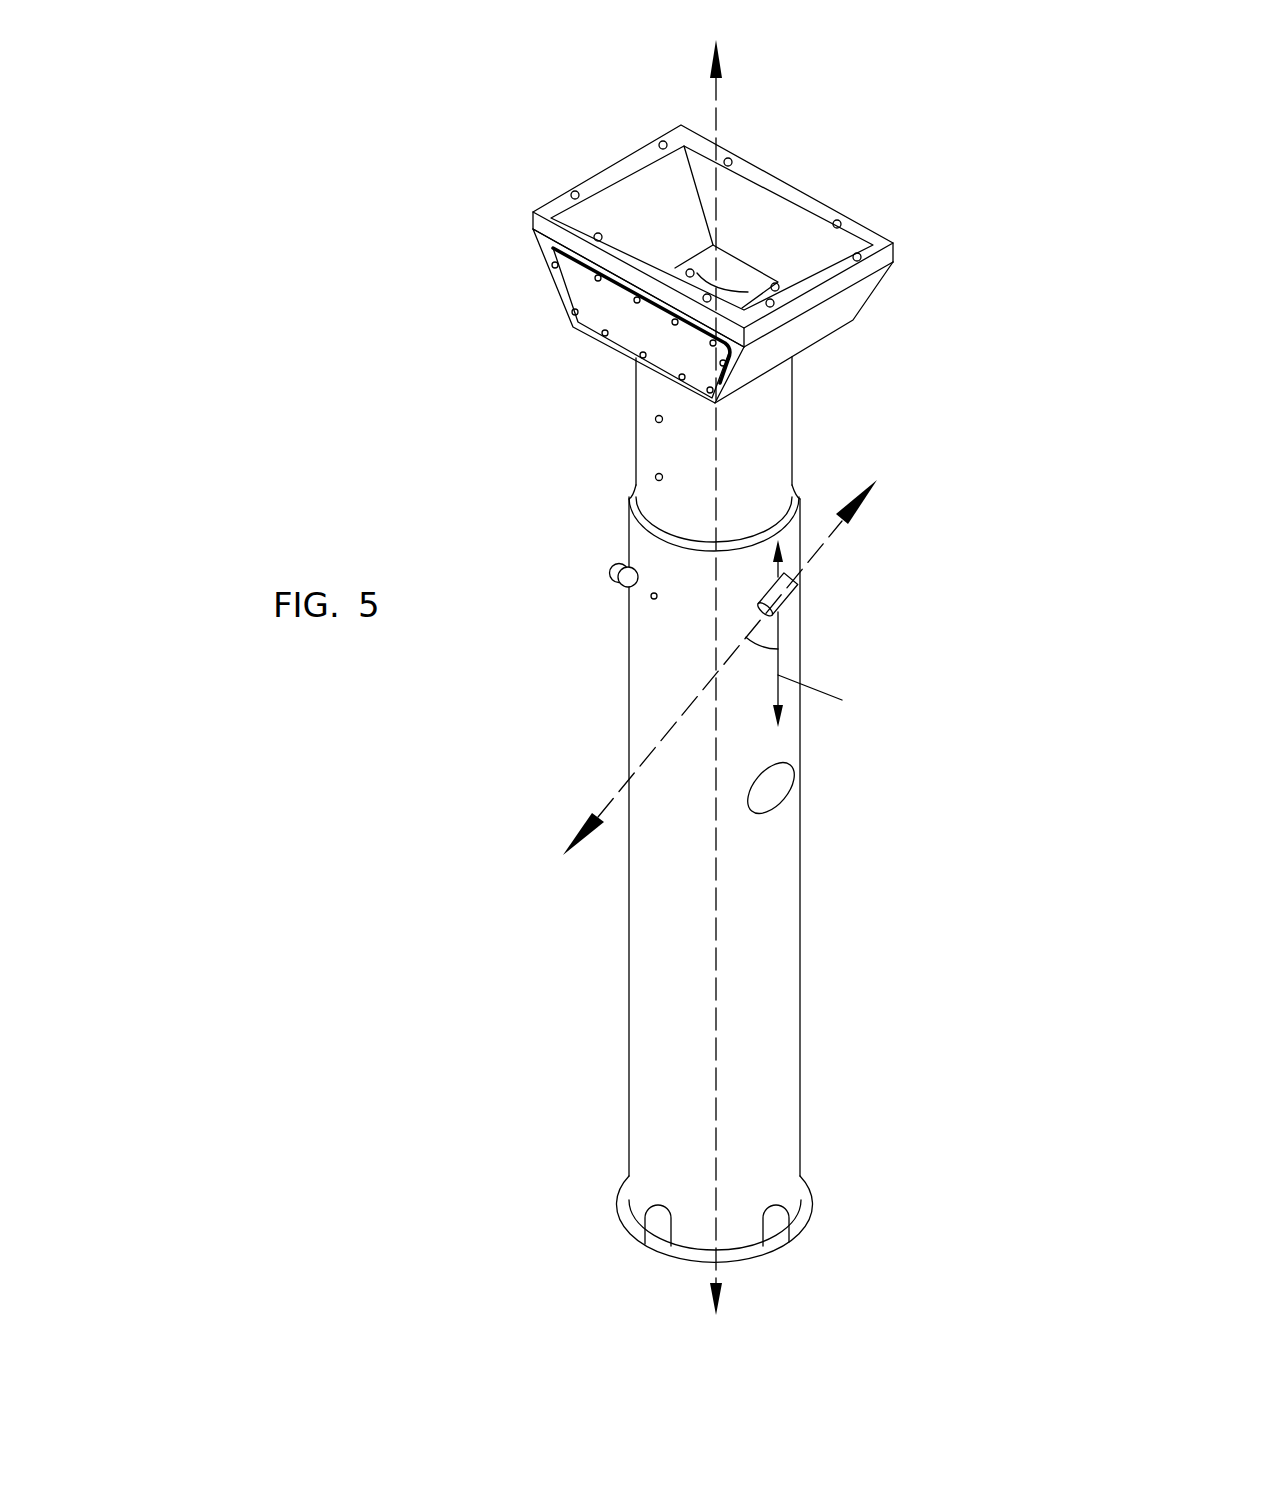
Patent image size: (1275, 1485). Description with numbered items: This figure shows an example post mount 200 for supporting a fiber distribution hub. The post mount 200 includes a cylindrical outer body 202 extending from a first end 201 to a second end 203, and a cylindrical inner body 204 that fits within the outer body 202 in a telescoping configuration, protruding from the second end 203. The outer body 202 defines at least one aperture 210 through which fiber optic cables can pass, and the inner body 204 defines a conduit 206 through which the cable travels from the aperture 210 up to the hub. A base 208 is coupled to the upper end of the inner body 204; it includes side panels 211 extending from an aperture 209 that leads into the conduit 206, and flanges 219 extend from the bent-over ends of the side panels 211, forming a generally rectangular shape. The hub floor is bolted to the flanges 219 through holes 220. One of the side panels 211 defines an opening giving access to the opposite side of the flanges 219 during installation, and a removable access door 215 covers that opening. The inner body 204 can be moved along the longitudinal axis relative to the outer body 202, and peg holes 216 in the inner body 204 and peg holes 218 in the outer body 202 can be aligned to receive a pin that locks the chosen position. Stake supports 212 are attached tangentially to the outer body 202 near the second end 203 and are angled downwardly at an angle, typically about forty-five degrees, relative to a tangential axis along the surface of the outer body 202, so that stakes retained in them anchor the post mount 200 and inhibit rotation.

The post mount 200 is at (513, 961).
The first end 201 is at (743, 1255).
The outer body 202 is at (719, 886).
The second end 203 is at (797, 492).
The inner body 204 is at (746, 421).
The conduit 206 is at (731, 244).
The base 208 is at (893, 252).
The aperture 209 is at (748, 290).
The aperture 210 is at (772, 789).
The side panels 211 is at (615, 209).
The stake supports 212 is at (613, 579).
The removable access door 215 is at (600, 317).
The peg holes 216 is at (656, 421).
The peg holes 218 is at (657, 600).
The flanges 219 is at (618, 170).
The holes 220 is at (840, 219).